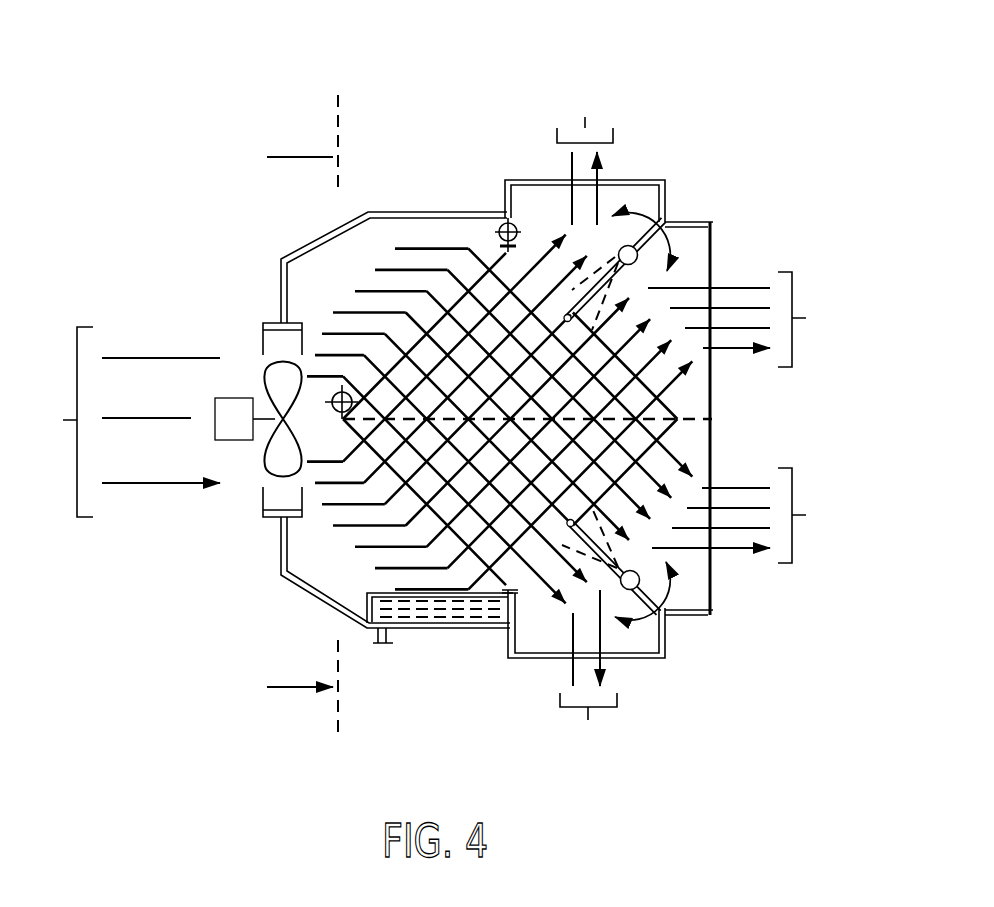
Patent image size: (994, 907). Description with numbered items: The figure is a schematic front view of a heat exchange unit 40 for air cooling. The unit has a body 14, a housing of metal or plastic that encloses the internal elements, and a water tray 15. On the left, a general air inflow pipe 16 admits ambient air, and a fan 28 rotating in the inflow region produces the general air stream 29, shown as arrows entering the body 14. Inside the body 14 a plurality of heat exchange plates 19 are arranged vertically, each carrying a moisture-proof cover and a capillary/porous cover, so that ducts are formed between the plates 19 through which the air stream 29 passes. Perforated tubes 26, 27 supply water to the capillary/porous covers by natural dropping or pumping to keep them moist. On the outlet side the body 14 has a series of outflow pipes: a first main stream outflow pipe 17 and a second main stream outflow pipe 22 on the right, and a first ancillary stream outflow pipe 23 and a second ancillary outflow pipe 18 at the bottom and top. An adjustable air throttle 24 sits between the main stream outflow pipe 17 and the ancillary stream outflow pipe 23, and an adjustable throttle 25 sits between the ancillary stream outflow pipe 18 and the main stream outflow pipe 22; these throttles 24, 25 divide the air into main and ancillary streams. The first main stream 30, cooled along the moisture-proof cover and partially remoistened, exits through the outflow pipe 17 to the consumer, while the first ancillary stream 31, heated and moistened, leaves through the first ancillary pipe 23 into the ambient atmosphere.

The body 14 is at (383, 211).
The water tray 15 is at (444, 604).
The general air inflow pipe 16 is at (266, 498).
The first main stream outflow pipe 17 is at (714, 598).
The second ancillary outflow pipe 18 is at (644, 180).
The heat exchange plate 19 is at (667, 402).
The second main stream outflow pipe 22 is at (713, 254).
The first ancillary stream outflow pipe 23 is at (644, 657).
The adjustable air throttle 24 is at (667, 617).
The adjustable throttle 25 is at (666, 219).
The perforated tube 26 is at (498, 228).
The perforated tube 27 is at (338, 392).
The fan 28 is at (278, 370).
The general air stream 29 is at (126, 422).
The first main stream 30 is at (746, 417).
The first ancillary stream 31 is at (587, 421).
The heat exchange unit 40 is at (770, 30).